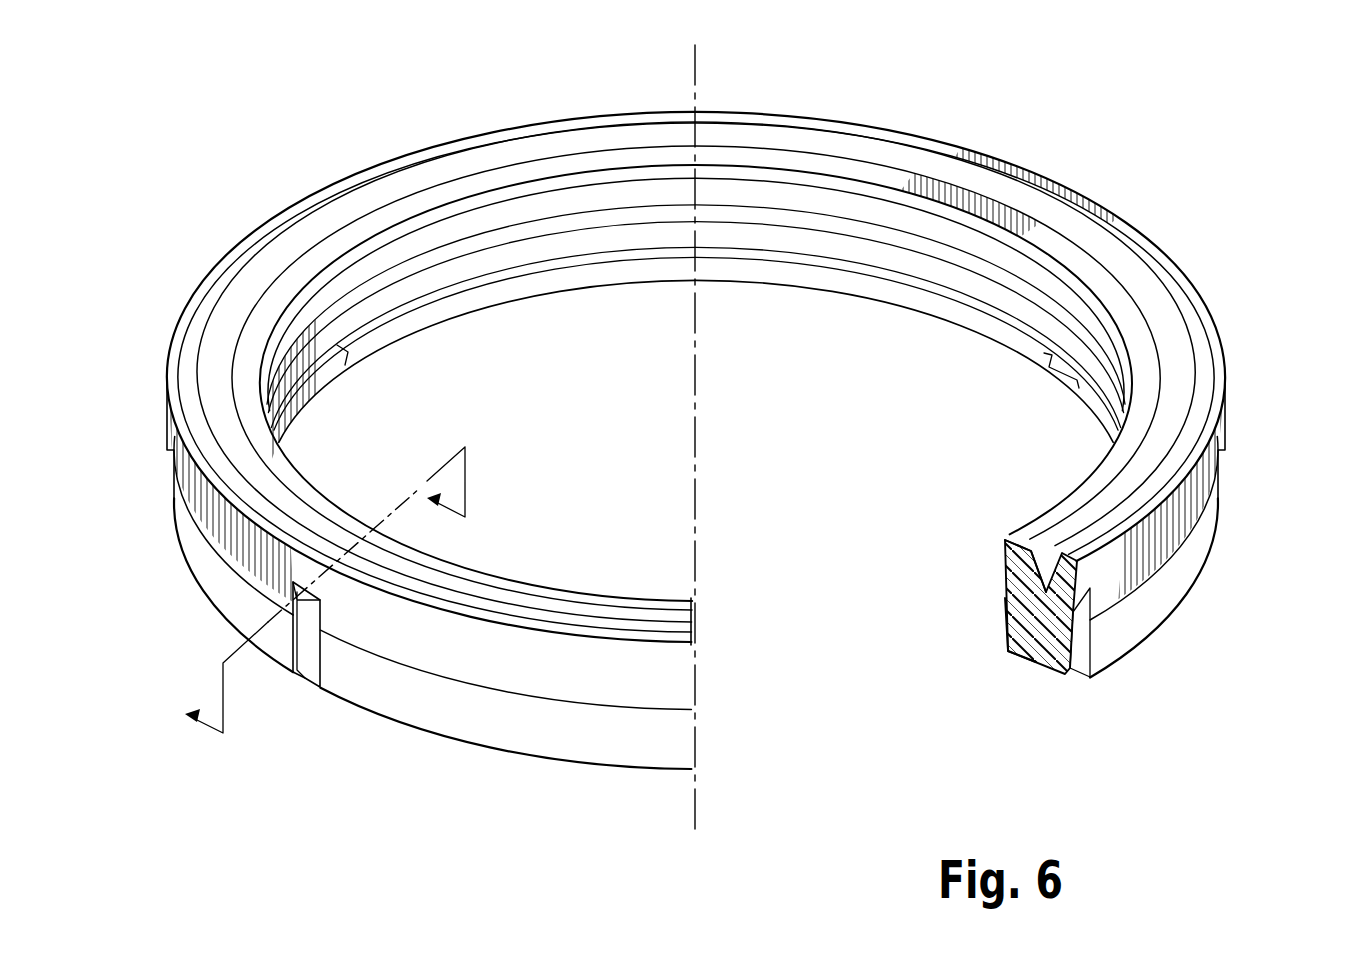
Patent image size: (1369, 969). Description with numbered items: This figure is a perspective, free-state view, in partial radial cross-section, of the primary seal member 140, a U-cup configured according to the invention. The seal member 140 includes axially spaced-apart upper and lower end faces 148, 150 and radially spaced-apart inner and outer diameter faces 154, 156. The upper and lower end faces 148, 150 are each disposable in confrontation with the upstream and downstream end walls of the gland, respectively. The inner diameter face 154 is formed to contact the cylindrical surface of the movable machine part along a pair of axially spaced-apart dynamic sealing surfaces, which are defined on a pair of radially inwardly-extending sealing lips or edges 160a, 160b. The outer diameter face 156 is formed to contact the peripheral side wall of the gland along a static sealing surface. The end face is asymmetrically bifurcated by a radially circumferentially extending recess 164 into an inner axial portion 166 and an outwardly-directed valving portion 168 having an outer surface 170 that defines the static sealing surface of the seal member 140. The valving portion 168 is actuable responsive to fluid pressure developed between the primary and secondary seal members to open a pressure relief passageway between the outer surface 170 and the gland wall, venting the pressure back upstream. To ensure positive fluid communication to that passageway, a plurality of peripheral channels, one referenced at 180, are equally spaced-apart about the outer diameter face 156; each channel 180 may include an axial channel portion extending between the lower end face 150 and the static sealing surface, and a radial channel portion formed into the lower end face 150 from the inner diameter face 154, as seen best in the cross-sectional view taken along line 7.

The primary seal member 140 is at (1292, 133).
The upper end face 148 is at (1140, 330).
The recess 164 is at (1185, 378).
The valving portion 168 is at (1225, 402).
The outer surface 170 is at (1222, 436).
The outer diameter face 156 is at (1185, 510).
The inner axial portion 166 is at (1120, 433).
The sealing lip 160a is at (1005, 542).
The inner diameter face 154 is at (1005, 567).
The sealing lip 160b is at (1008, 628).
The lower end face 150 is at (1012, 649).
The peripheral channel 180 is at (303, 697).
The section line 7- 7 is at (320, 590).